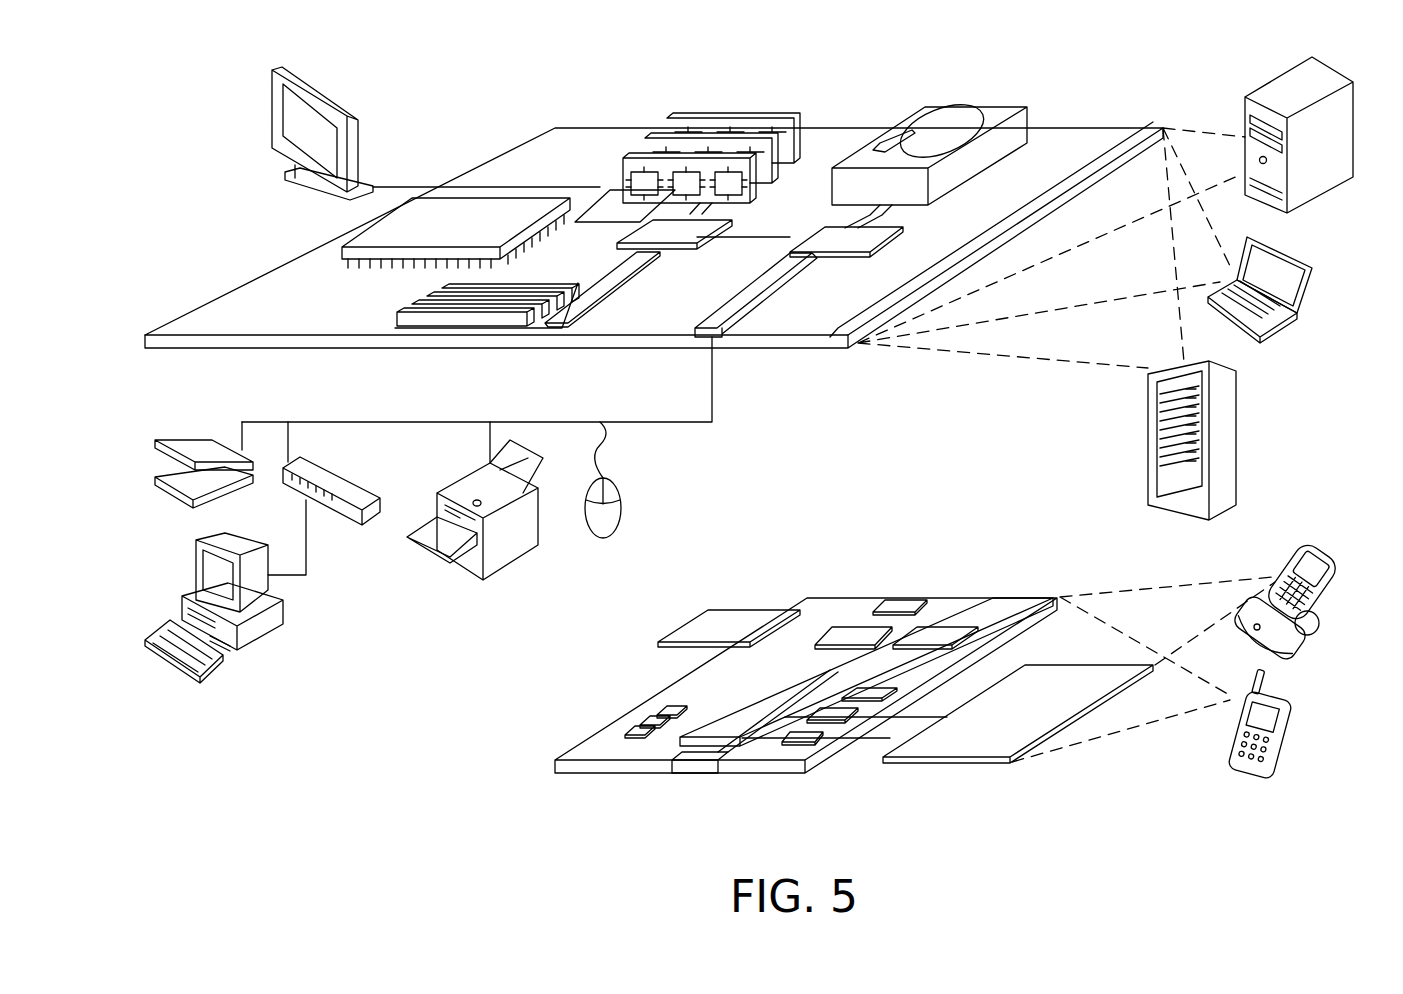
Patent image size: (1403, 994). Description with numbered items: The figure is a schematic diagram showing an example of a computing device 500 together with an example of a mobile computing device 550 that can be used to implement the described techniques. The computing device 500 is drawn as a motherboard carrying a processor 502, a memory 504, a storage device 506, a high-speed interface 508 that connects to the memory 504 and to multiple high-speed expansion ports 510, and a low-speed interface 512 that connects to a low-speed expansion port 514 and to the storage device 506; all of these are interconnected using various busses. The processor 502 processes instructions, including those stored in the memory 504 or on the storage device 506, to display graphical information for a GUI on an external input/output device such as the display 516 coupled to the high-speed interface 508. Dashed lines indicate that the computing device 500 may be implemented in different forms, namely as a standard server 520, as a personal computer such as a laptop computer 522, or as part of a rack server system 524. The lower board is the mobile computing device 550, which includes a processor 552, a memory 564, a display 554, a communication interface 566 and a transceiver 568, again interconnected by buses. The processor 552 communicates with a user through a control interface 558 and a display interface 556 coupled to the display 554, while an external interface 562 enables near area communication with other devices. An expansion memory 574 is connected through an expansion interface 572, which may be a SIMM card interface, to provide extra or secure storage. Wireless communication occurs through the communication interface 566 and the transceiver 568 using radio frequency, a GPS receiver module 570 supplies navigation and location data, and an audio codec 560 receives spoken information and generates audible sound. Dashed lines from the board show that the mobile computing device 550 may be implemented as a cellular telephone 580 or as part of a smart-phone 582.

The computing device 500 is at (474, 93).
The processor 502 is at (348, 250).
The memory 504 is at (683, 118).
The storage device 506 is at (920, 110).
The high-speed interface 508 is at (655, 232).
The high-speed expansion ports 510 is at (417, 305).
The low-speed interface 512 is at (820, 232).
The low-speed expansion port 514 is at (722, 338).
The display 516 is at (274, 72).
The standard server 520 is at (1245, 120).
The laptop computer 522 is at (1313, 266).
The rack server system 524 is at (1148, 462).
The mobile computing device 550 is at (522, 778).
The processor 552 is at (733, 727).
The display 554 is at (978, 748).
The display interface 556 is at (807, 745).
The control interface 558 is at (846, 720).
The audio codec 560 is at (865, 690).
The external interface 562 is at (698, 773).
The memory 564 is at (648, 726).
The communication interface 566 is at (858, 633).
The transceiver 568 is at (935, 633).
The GPS receiver module 570 is at (905, 602).
The expansion interface 572 is at (787, 608).
The expansion memory 574 is at (708, 612).
The cellular telephone 580 is at (1293, 552).
The smart-phone 582 is at (1238, 735).